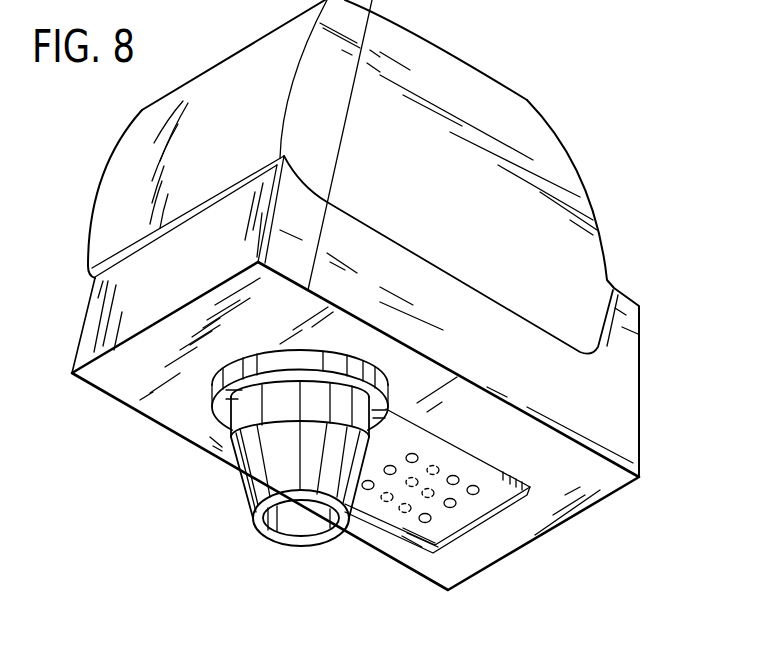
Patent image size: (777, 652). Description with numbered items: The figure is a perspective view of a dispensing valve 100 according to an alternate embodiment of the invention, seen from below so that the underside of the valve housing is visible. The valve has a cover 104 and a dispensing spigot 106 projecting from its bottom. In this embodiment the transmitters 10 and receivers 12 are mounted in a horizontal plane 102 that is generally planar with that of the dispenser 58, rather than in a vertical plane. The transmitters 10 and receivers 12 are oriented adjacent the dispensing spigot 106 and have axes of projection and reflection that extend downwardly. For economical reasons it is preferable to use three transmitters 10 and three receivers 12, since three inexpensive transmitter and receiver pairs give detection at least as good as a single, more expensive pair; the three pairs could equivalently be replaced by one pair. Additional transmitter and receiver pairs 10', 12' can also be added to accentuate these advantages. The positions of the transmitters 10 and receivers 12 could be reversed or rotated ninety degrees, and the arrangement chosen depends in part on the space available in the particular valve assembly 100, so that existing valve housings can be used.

The dispensing valve 100 is at (588, 138).
The horizontal plane 102 is at (496, 544).
The cover 104 is at (440, 206).
The dispensing spigot 106 is at (253, 470).
The dispenser 58 is at (277, 554).
The transmitter 10 is at (446, 563).
The additional transmitter 10' is at (484, 450).
The receiver 12 is at (378, 534).
The additional receiver 12' is at (429, 450).